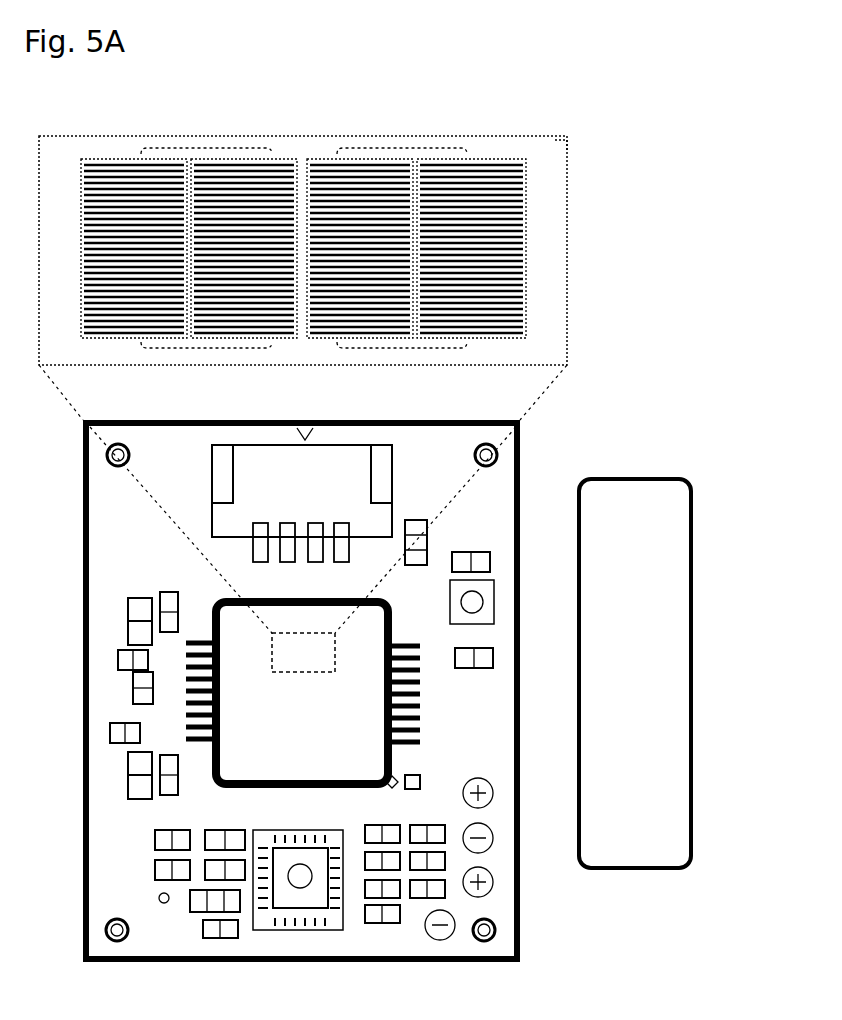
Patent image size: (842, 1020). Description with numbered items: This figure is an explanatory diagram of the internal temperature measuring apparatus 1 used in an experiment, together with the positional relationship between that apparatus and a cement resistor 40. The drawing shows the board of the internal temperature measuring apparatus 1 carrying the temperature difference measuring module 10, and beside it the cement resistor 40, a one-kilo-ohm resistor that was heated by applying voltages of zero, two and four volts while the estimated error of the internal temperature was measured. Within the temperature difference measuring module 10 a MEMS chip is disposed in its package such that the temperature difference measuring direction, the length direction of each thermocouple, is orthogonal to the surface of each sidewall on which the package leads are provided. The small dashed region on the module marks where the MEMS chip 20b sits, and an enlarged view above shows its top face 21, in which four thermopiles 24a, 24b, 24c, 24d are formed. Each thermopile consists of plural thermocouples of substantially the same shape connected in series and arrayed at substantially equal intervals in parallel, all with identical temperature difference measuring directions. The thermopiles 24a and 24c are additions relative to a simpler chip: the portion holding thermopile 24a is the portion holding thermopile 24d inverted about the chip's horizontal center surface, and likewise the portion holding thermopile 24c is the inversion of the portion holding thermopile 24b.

The internal temperature measuring apparatus 1 is at (540, 436).
The temperature difference measuring module 10 is at (383, 750).
The MEMS chip 20b is at (551, 114).
The top face 21 is at (558, 143).
The thermopile 24a is at (186, 131).
The thermopile 24b is at (296, 131).
The thermopile 24c is at (413, 131).
The thermopile 24d is at (524, 131).
The cement resistor 40 is at (685, 594).